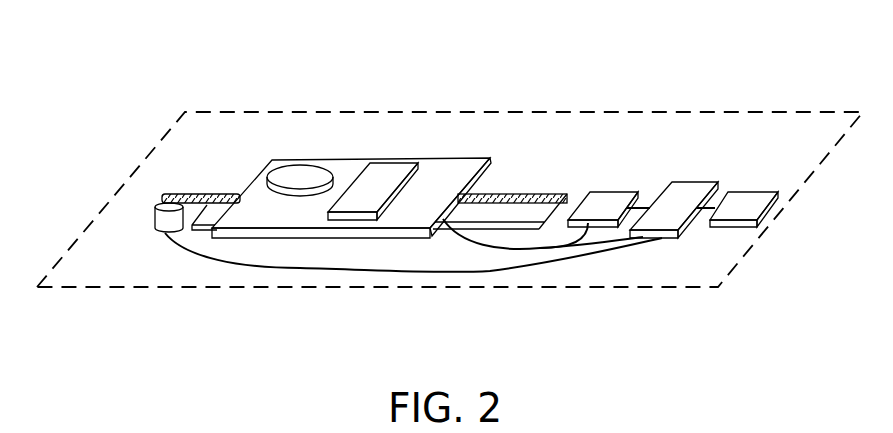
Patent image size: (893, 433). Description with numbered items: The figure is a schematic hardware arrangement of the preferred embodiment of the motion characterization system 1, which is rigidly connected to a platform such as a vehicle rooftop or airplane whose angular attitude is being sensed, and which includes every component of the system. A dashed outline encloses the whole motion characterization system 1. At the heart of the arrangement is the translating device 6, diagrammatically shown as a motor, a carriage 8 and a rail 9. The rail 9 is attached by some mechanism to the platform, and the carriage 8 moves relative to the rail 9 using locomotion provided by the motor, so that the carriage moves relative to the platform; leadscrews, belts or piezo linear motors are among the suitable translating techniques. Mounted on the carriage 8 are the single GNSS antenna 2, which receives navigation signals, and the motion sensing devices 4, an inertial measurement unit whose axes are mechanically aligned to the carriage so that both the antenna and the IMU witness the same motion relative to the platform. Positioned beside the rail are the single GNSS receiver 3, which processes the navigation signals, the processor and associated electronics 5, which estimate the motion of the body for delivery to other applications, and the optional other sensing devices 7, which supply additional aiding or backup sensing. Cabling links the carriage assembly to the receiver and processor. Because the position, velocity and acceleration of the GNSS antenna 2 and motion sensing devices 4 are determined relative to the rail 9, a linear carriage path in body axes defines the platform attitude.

The motion characterization system 1 is at (459, 112).
The GNSS antenna 2 is at (278, 165).
The GNSS receiver 3 is at (598, 192).
The motion sensing devices 4 is at (327, 215).
The processor and associated electronics 5 is at (683, 232).
The translating device 6 is at (218, 162).
The other sensing devices 7 is at (743, 228).
The carriage 8 is at (358, 157).
The rail 9 is at (558, 190).